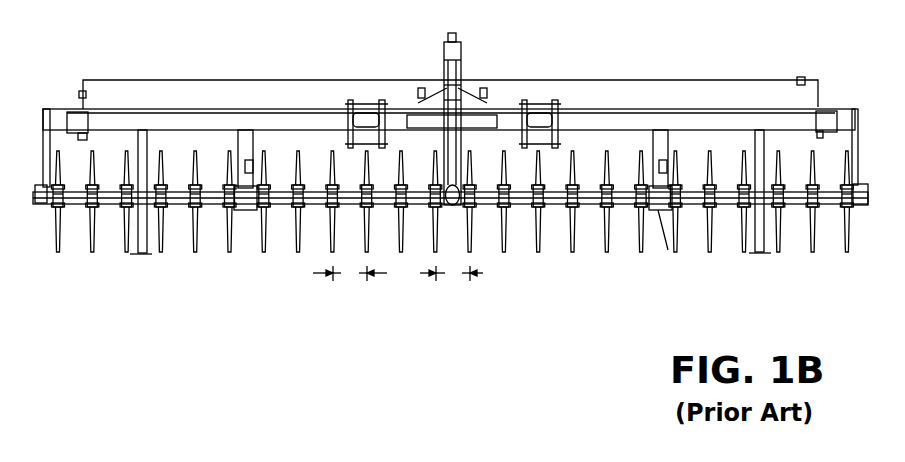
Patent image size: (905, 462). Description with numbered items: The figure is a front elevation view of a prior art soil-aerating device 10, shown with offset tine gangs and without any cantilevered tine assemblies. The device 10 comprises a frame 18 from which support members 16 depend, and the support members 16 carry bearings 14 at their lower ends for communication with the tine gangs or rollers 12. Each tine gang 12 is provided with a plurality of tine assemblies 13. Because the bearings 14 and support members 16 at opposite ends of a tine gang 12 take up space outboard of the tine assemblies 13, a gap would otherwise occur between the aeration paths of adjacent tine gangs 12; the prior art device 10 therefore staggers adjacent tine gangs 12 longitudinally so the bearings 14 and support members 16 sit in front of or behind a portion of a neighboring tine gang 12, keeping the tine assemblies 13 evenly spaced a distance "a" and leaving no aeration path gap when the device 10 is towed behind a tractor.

The soil-aerating device 10 is at (157, 327).
The tine gangs 12 is at (553, 206).
The tine assemblies 13 is at (258, 242).
The bearings 14 is at (665, 250).
The support members 16 is at (666, 137).
The frame 18 is at (203, 120).